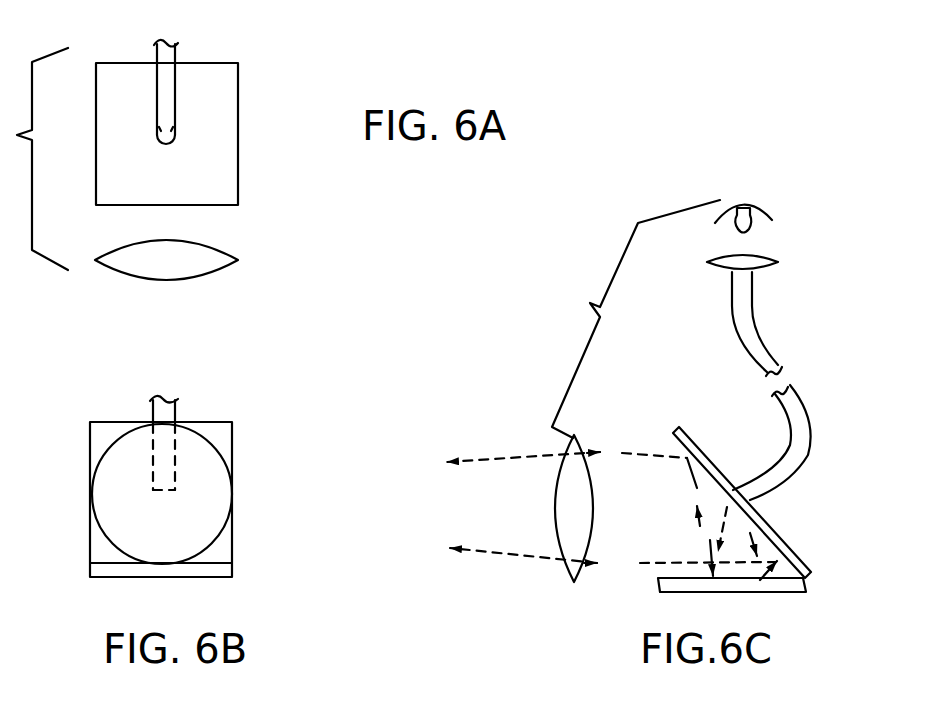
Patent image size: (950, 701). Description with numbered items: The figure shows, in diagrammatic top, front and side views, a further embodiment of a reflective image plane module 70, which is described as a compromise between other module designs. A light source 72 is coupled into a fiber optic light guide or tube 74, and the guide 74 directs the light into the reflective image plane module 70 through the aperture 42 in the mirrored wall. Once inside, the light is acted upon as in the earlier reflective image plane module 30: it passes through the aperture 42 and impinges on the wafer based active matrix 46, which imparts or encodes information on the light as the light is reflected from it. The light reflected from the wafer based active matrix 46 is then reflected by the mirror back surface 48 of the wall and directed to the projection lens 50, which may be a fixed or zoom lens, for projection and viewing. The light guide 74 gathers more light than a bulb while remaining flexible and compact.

In FIG. 6C, the reflective image plane module 30 is at (832, 556).
In FIG. 6A, the aperture 42 is at (157, 137).
In FIG. 6B, the aperture 42 is at (160, 492).
In FIG. 6C, the aperture 42 is at (752, 508).
In FIG. 6B, the wafer based active matrix 46 is at (223, 573).
In FIG. 6C, the wafer based active matrix 46 is at (663, 583).
In FIG. 6C, the mirror back surface 48 is at (693, 482).
In FIG. 6A, the projection lens 50 is at (230, 253).
In FIG. 6B, the projection lens 50 is at (217, 504).
In FIG. 6C, the projection lens 50 is at (555, 503).
In FIG. 6A, the reflective image plane module 70 is at (296, 80).
In FIG. 6B, the reflective image plane module 70 is at (285, 436).
In FIG. 6C, the reflective image plane module 70 is at (705, 405).
In FIG. 6C, the light source 72 is at (722, 252).
In FIG. 6A, the fiber optic light guide or tube 74 is at (174, 56).
In FIG. 6B, the fiber optic light guide or tube 74 is at (173, 415).
In FIG. 6C, the fiber optic light guide or tube 74 is at (732, 303).